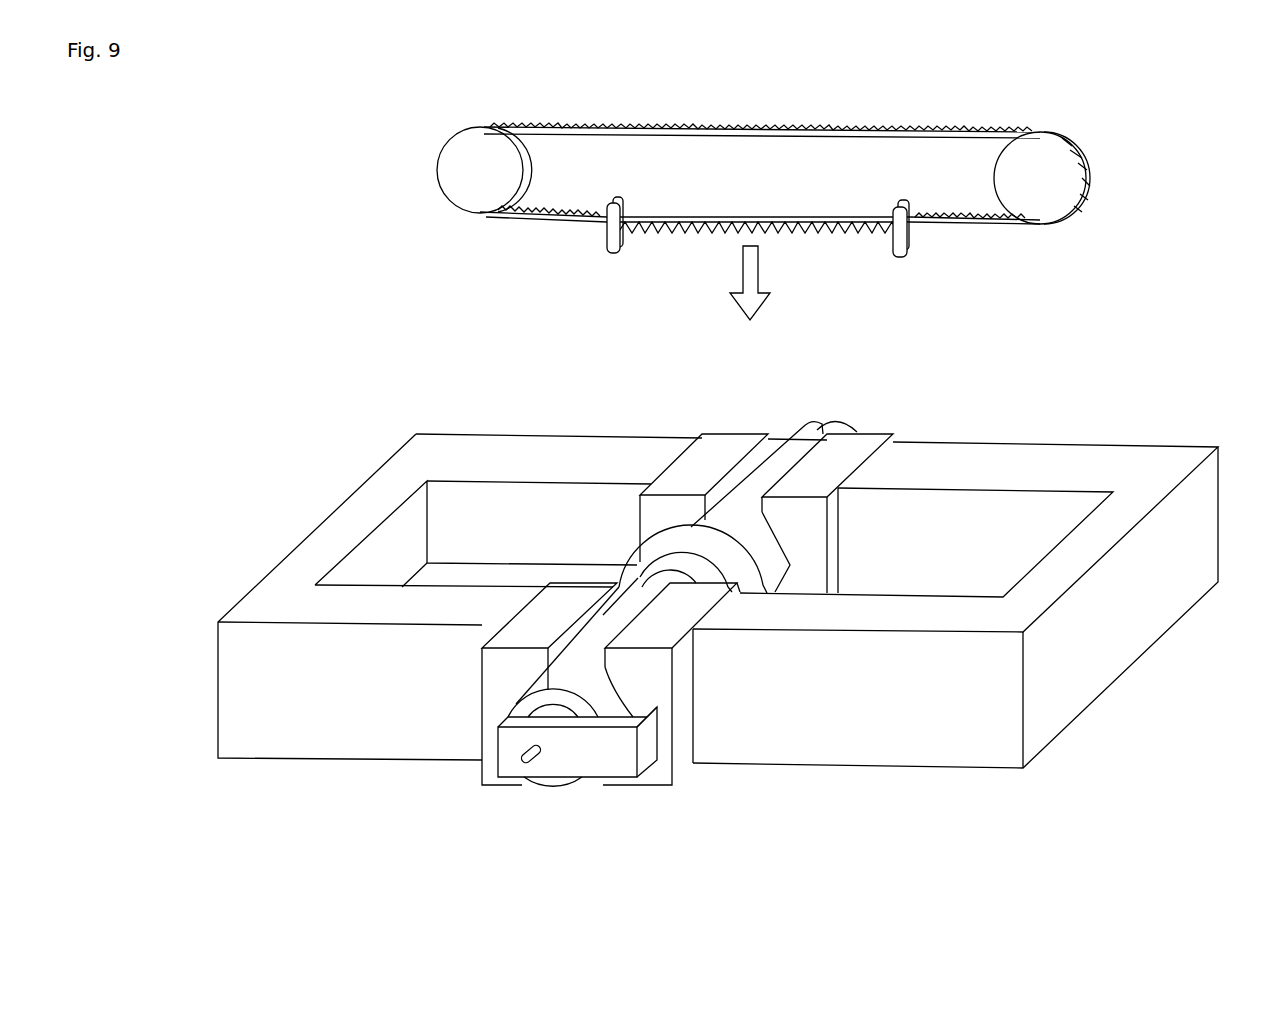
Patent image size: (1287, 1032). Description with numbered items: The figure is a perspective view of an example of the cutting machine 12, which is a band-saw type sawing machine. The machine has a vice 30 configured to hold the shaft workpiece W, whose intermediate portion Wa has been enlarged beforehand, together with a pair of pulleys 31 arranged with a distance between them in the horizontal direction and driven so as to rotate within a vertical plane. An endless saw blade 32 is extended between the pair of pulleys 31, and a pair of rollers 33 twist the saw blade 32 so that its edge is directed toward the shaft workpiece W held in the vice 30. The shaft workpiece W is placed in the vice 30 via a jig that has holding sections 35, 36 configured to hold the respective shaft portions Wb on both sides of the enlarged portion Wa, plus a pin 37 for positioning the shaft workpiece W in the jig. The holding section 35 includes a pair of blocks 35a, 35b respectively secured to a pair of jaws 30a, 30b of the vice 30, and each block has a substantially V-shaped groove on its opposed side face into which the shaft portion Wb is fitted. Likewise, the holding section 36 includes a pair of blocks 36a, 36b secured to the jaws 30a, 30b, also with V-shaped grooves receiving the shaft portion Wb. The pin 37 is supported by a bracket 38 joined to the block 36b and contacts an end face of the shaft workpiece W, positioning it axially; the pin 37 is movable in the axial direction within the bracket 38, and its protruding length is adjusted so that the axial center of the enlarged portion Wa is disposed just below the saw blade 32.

The cutting machine 12 is at (1169, 64).
The vice 30 is at (739, 559).
The jaw 30a is at (340, 520).
The jaw 30b is at (1128, 648).
The pulley 31 is at (435, 177).
The saw blade 32 is at (738, 125).
The roller 33 is at (610, 248).
The holding section 35 is at (812, 462).
The block 35a is at (708, 438).
The block 35b is at (870, 437).
The holding section 36 is at (592, 745).
The block 36a is at (490, 785).
The block 36b is at (680, 768).
The pin 37 is at (538, 785).
The bracket 38 is at (598, 785).
The shaft workpiece W is at (619, 578).
The intermediate portion Wa is at (670, 543).
The shaft portion Wb is at (820, 432).